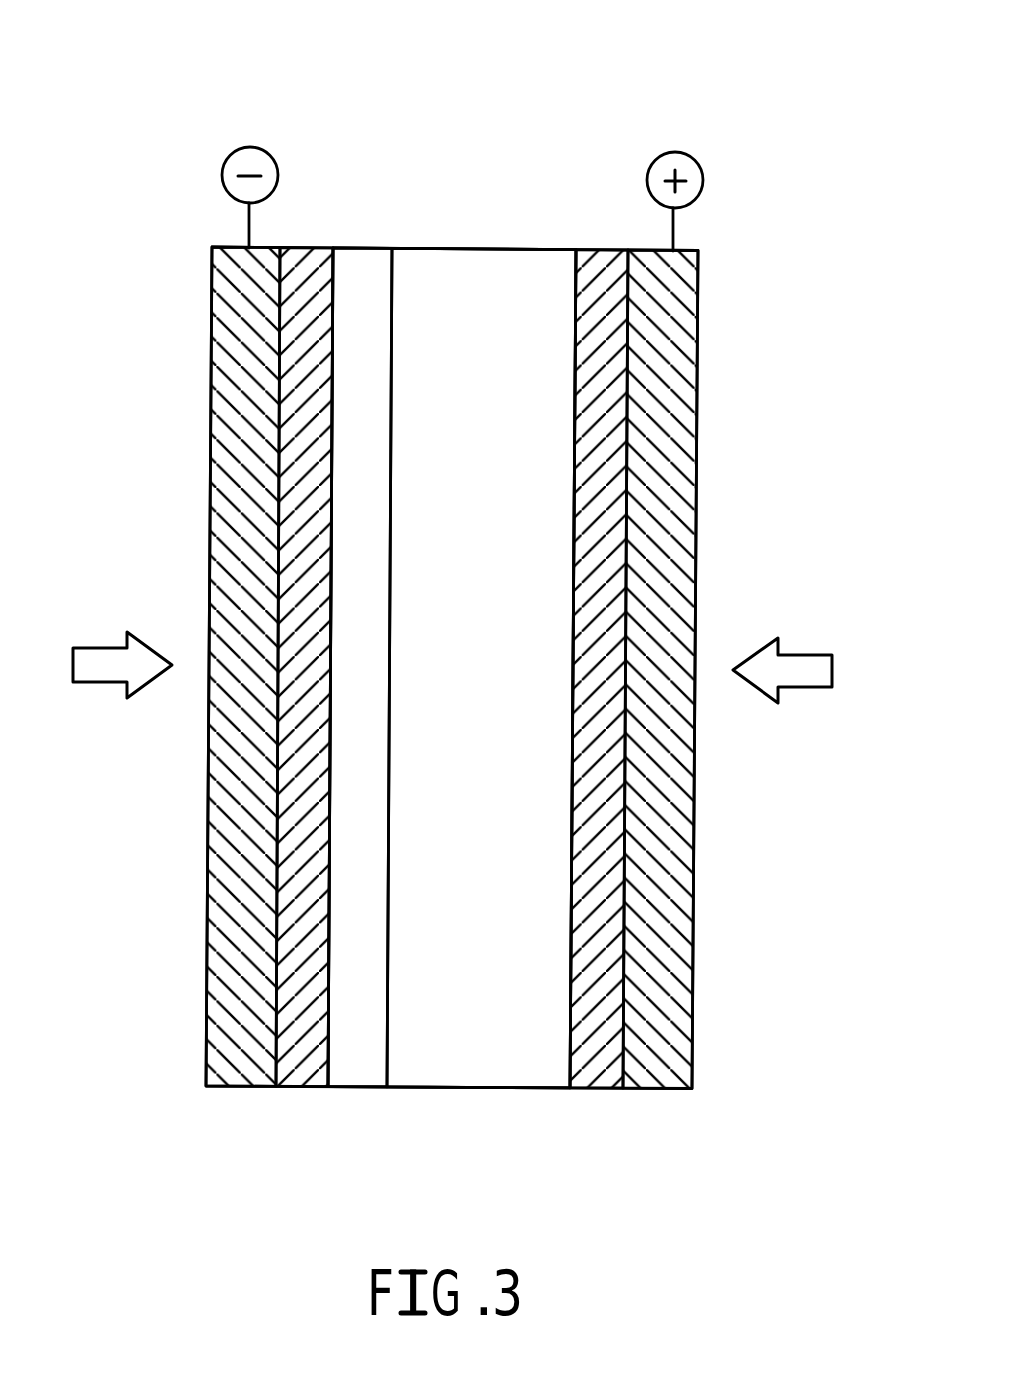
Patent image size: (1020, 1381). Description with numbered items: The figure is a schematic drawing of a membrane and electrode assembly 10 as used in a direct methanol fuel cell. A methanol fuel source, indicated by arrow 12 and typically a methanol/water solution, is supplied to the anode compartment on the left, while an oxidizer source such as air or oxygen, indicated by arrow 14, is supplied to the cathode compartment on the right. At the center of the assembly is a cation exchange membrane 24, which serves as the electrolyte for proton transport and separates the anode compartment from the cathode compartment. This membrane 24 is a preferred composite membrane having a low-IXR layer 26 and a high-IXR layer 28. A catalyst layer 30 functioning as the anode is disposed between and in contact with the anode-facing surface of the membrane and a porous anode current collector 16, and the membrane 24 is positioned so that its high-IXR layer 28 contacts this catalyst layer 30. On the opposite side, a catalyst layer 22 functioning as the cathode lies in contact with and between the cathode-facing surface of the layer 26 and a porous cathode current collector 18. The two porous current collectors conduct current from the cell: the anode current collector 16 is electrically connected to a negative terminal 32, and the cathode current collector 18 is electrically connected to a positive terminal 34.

The membrane and electrode assembly 10 is at (540, 106).
The methanol fuel source 12 is at (127, 613).
The oxidizer source 14 is at (820, 620).
The porous anode current collector 16 is at (233, 823).
The porous cathode current collector 18 is at (658, 830).
The catalyst layer 22 is at (602, 1068).
The cation exchange membrane 24 is at (425, 1135).
The low-IXR layer 26 is at (492, 1045).
The high-IXR layer 28 is at (361, 1057).
The catalyst layer 30 is at (293, 1057).
The negative terminal 32 is at (231, 154).
The positive terminal 34 is at (700, 156).